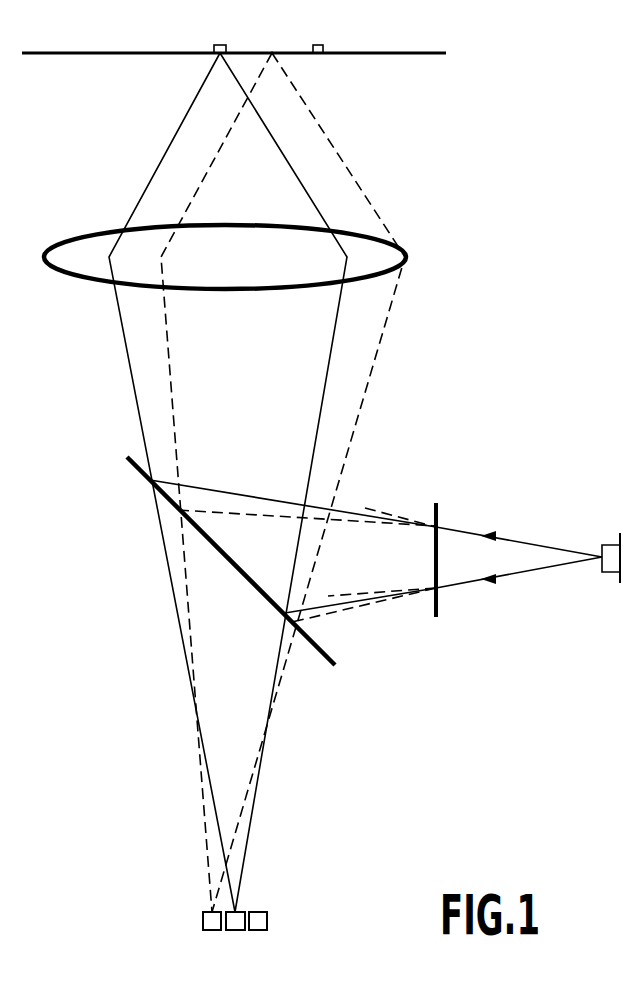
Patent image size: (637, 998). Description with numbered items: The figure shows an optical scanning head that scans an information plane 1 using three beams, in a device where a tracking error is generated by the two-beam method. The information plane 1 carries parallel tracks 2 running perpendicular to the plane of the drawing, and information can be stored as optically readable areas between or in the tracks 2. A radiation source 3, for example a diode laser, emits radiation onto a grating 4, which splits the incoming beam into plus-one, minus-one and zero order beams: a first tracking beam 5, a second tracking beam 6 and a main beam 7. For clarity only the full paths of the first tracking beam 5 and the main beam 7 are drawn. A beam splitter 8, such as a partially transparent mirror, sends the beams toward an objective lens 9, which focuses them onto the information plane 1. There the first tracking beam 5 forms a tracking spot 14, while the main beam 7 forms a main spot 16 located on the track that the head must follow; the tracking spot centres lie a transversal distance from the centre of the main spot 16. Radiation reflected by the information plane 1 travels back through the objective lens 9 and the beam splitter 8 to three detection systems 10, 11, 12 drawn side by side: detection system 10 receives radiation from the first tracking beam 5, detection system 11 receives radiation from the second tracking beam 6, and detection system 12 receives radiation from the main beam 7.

The information plane 1 is at (422, 57).
The tracks 2 is at (322, 45).
The radiation source 3 is at (620, 540).
The grating 4 is at (438, 508).
The first tracking beam 5 is at (382, 526).
The second tracking beam 6 is at (381, 504).
The main beam 7 is at (347, 511).
The beam splitter 8 is at (129, 464).
The objective lens 9 is at (80, 248).
The detection system 10 is at (215, 930).
The detection system 11 is at (261, 930).
The detection system 12 is at (240, 930).
The tracking spot 14 is at (272, 53).
The main spot 16 is at (218, 65).